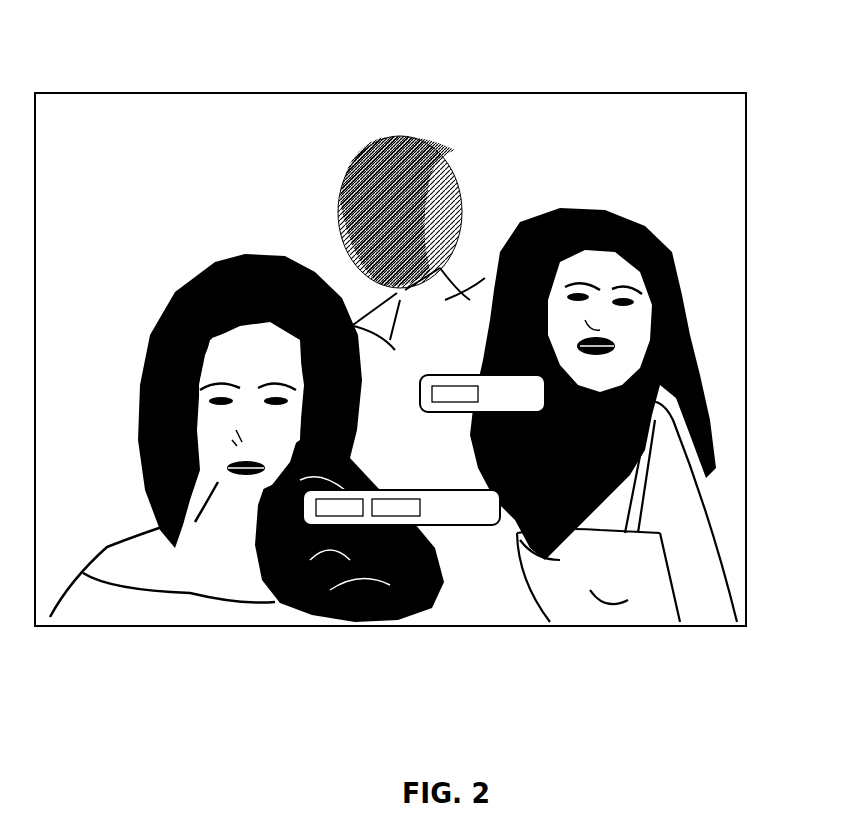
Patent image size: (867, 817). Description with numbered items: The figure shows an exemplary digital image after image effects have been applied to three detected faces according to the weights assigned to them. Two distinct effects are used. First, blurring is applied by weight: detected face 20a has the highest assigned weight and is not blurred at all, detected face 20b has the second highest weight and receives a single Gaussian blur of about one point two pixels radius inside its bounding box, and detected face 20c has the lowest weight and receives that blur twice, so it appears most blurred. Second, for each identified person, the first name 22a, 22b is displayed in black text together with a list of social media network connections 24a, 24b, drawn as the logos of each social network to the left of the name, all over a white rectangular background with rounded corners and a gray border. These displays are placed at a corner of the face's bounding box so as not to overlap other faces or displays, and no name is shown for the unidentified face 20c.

The detected face 20a is at (212, 448).
The detected face 20b is at (612, 333).
The detected face 20c is at (421, 230).
The first name 22a is at (458, 525).
The first name 22b is at (540, 397).
The social media network connections 24a is at (378, 545).
The social media network connections 24b is at (458, 386).